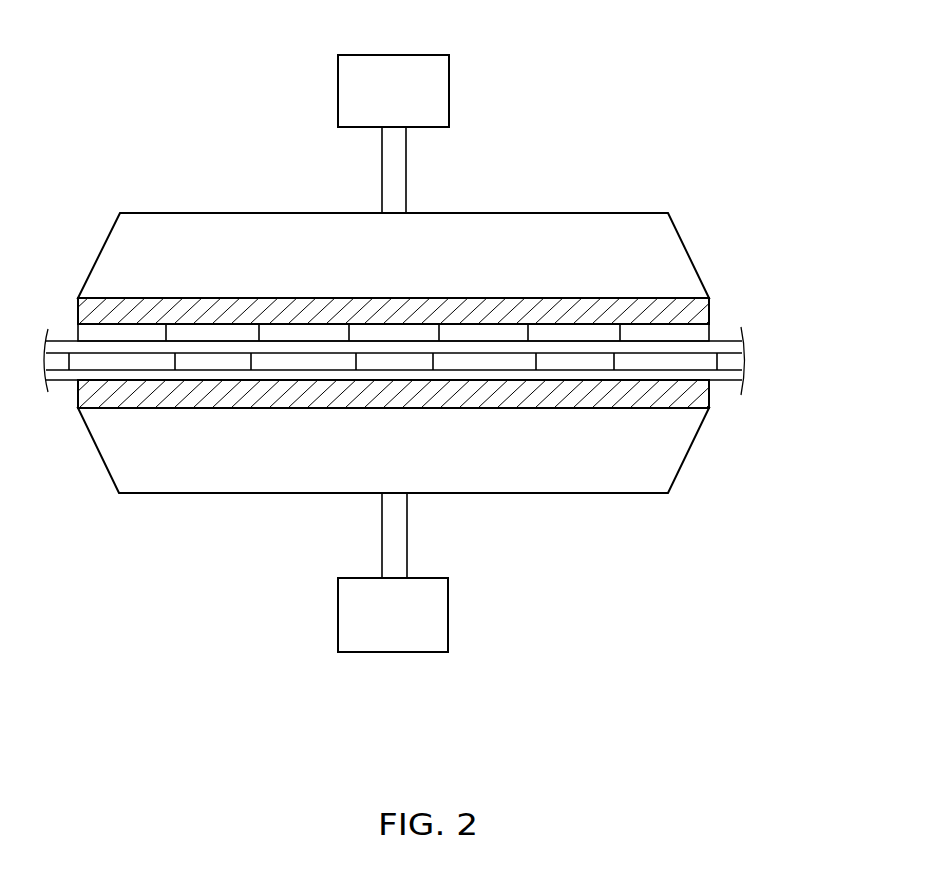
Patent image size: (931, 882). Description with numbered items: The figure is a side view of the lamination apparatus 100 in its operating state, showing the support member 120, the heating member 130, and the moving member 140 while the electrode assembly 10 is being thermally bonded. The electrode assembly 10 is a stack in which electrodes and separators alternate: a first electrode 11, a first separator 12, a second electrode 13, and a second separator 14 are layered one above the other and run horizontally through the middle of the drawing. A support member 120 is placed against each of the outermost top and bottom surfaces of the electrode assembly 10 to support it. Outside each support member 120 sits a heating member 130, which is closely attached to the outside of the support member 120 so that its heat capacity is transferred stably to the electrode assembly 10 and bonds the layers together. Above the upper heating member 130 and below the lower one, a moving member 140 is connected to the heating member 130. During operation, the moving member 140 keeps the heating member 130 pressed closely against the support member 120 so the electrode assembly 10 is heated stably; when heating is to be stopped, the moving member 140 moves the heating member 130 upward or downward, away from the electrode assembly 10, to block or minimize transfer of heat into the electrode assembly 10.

The pressing apparatus 100 is at (672, 78).
The moving member 140 is at (436, 92).
The heating member 130 is at (568, 225).
The support member 120 is at (622, 305).
The electrode assembly 10 is at (810, 275).
The first electrode 11 is at (702, 333).
The first separator 12 is at (730, 347).
The second electrode 13 is at (713, 362).
The second separator 14 is at (740, 377).